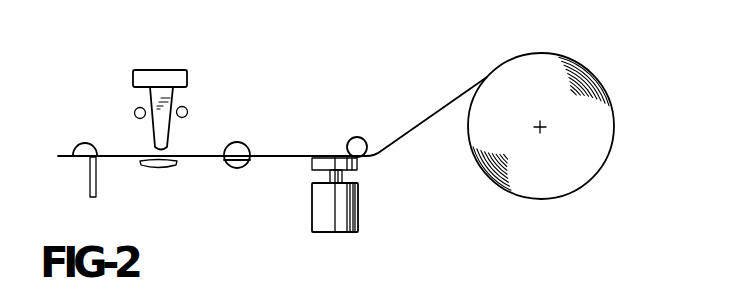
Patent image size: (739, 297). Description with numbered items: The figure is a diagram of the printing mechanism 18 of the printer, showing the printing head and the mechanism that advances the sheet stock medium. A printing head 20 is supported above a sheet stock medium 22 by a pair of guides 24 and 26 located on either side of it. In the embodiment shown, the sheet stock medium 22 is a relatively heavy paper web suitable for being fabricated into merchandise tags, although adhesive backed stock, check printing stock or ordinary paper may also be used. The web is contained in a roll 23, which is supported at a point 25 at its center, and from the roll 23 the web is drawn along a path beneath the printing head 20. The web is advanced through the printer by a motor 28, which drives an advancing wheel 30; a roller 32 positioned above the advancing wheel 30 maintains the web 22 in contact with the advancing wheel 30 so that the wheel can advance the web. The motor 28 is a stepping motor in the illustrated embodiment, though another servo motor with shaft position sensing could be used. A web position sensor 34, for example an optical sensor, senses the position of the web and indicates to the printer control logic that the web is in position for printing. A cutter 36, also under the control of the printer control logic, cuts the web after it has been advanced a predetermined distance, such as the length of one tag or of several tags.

The printing mechanism 18 is at (222, 73).
The printing head 20 is at (162, 70).
The sheet stock medium 22 is at (272, 154).
The roll 23 is at (594, 80).
The guide 24 is at (135, 109).
The point 25 is at (543, 128).
The guide 26 is at (187, 109).
The motor 28 is at (358, 204).
The advancing wheel 30 is at (362, 160).
The roller 32 is at (354, 137).
The web position sensor 34 is at (252, 164).
The cutter 36 is at (88, 180).